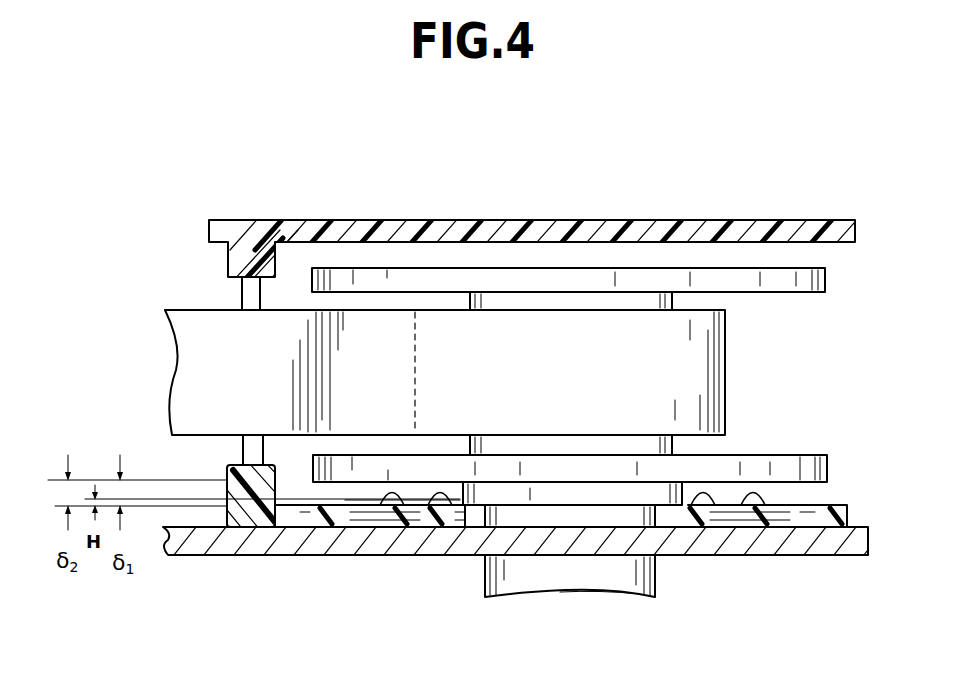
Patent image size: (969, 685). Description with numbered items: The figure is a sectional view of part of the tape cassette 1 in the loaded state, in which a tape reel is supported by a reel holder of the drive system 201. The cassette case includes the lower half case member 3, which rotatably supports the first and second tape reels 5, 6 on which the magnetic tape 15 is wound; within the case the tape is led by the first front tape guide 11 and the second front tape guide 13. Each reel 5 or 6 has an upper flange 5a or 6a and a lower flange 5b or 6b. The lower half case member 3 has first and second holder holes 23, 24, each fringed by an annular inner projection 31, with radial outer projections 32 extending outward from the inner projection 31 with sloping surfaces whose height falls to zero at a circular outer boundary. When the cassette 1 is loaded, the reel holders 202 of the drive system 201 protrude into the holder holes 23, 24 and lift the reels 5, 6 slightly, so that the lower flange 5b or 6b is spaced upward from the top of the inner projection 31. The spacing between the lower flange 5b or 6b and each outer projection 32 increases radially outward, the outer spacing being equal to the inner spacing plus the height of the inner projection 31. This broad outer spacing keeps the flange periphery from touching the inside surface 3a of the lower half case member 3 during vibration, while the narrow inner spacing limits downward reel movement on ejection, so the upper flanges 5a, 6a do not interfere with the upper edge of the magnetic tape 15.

The tape cassette 1 is at (247, 208).
The first front tape guide 11 is at (247, 300).
The second front tape guide 13 is at (190, 331).
The magnetic tape 15 is at (191, 300).
The first tape reel 5 is at (569, 312).
The second tape reel 6 is at (569, 312).
The upper flange of first reel 5a is at (339, 283).
The upper flange of second reel 6a is at (568, 217).
The lower flange of first reel 5b is at (371, 465).
The lower flange of second reel 6b is at (570, 312).
The first holder hole 23 is at (476, 484).
The second holder hole 24 is at (563, 568).
The reel holder 202 is at (604, 583).
The drive system 201 is at (217, 568).
The lower half case member 3 is at (218, 466).
The inside surface of lower half case member 3a is at (320, 512).
The annular inner projection 31 is at (432, 498).
The outer projection 32 is at (386, 500).